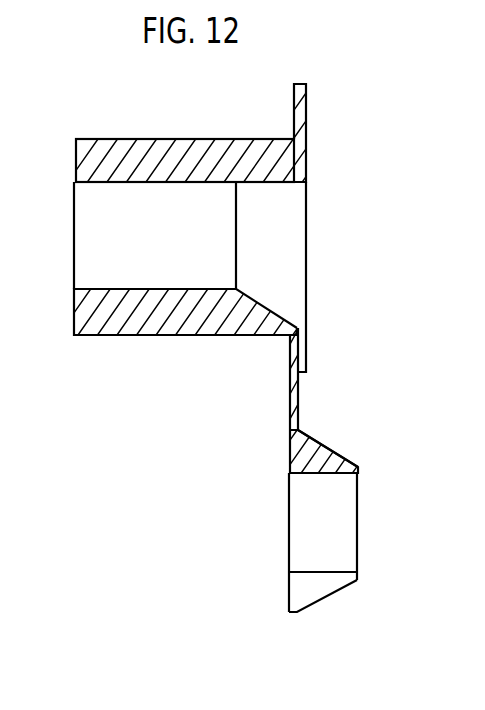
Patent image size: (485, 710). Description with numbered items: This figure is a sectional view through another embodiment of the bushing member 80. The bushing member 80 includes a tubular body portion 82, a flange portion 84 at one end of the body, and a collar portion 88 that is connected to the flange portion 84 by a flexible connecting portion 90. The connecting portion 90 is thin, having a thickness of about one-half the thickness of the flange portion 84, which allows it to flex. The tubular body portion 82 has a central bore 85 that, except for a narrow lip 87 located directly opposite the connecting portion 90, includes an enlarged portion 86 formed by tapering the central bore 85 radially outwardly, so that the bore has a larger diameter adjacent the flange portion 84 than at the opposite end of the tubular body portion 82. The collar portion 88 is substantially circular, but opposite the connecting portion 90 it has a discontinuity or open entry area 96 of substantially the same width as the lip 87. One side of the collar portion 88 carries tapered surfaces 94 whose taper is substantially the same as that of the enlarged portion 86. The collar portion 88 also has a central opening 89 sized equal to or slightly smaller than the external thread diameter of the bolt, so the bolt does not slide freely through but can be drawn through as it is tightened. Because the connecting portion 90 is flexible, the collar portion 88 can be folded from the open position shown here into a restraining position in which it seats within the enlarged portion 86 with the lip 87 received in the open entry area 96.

The bushing member 80 is at (176, 137).
The tubular body portion 82 is at (145, 326).
The flange portion 84 is at (298, 110).
The central bore 85 is at (95, 184).
The enlarged portion 86 is at (268, 312).
The lip 87 is at (305, 178).
The collar portion 88 is at (295, 458).
The central opening 89 is at (305, 572).
The connecting portion 90 is at (292, 365).
The tapered surfaces 94 is at (333, 452).
The open entry area 96 is at (320, 590).